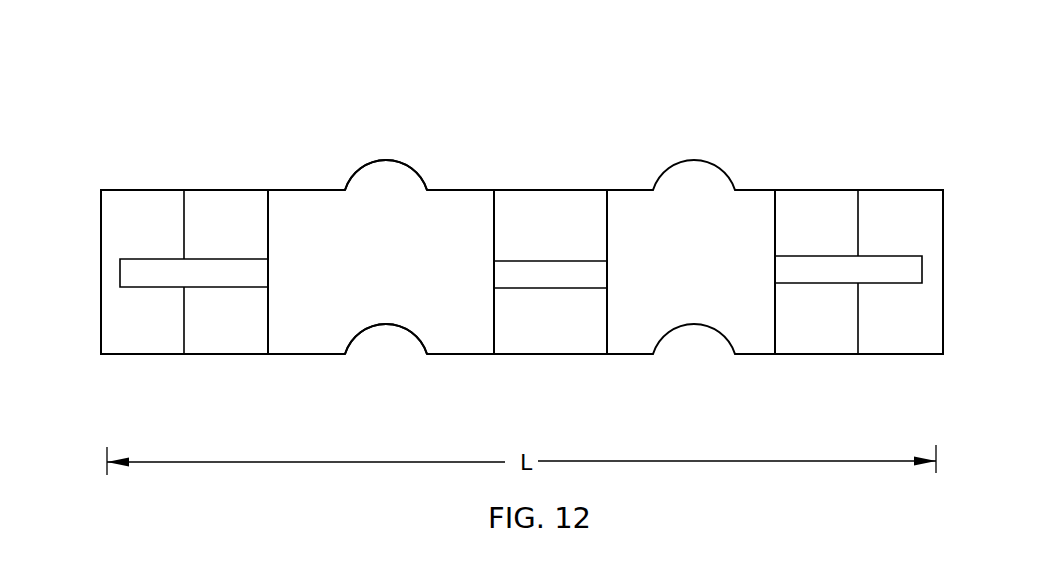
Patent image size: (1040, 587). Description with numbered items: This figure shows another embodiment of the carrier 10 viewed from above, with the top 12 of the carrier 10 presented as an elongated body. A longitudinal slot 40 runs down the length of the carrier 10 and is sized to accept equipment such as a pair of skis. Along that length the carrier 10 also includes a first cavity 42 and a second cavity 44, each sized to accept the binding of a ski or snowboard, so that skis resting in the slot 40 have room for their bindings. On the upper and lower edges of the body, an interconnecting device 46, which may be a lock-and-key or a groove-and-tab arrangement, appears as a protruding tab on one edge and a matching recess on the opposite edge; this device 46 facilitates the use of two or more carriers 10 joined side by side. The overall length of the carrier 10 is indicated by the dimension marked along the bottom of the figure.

The carrier 10 is at (526, 226).
The top 12 is at (212, 263).
The longitudinal slot 40 is at (132, 259).
The first cavity 42 is at (711, 281).
The second cavity 44 is at (394, 279).
The interconnecting device 46 is at (412, 165).